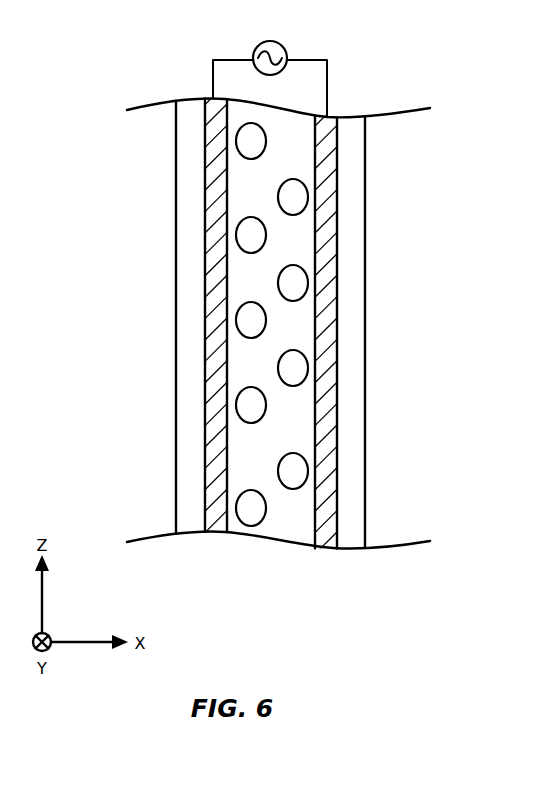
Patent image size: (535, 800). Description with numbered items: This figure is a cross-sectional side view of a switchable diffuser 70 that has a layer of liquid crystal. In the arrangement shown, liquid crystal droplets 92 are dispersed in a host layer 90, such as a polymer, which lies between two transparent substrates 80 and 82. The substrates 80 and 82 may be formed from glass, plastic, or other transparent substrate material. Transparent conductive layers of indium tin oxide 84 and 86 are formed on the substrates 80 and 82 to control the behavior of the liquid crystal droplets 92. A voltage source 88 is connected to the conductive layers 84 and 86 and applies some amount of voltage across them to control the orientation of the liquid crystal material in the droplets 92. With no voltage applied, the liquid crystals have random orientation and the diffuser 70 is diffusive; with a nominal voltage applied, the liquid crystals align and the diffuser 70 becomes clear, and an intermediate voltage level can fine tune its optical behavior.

The switchable diffuser 70 is at (365, 560).
The transparent substrate 80 is at (180, 285).
The transparent substrate 82 is at (358, 287).
The indium tin oxide layer 84 is at (210, 100).
The indium tin oxide layer 86 is at (330, 117).
The voltage source 88 is at (250, 47).
The host layer 90 is at (326, 324).
The liquid crystal droplets 92 is at (297, 472).